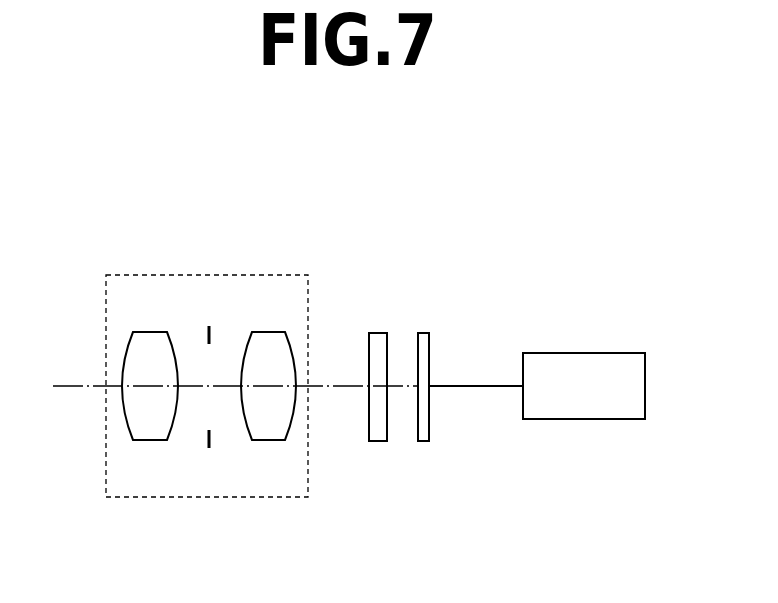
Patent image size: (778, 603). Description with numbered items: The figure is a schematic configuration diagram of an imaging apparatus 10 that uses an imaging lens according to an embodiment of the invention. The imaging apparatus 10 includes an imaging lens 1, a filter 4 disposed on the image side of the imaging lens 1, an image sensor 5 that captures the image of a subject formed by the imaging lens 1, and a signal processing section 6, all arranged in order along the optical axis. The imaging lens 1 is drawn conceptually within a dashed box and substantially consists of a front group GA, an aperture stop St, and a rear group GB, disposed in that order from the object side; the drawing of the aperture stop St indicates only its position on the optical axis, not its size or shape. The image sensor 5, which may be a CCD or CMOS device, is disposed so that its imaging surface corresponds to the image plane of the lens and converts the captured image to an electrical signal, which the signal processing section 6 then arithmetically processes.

The imaging apparatus 10 is at (386, 214).
The imaging lens 1 is at (228, 274).
The front group GA is at (141, 441).
The aperture stop St is at (209, 447).
The rear group GB is at (261, 441).
The filter 4 is at (377, 332).
The image sensor 5 is at (424, 332).
The signal processing section 6 is at (625, 352).